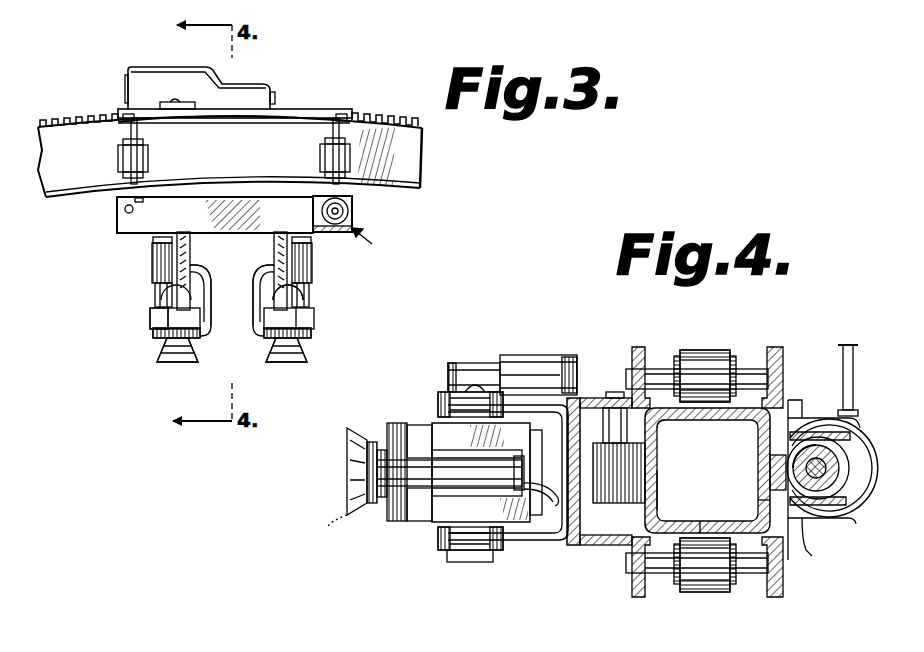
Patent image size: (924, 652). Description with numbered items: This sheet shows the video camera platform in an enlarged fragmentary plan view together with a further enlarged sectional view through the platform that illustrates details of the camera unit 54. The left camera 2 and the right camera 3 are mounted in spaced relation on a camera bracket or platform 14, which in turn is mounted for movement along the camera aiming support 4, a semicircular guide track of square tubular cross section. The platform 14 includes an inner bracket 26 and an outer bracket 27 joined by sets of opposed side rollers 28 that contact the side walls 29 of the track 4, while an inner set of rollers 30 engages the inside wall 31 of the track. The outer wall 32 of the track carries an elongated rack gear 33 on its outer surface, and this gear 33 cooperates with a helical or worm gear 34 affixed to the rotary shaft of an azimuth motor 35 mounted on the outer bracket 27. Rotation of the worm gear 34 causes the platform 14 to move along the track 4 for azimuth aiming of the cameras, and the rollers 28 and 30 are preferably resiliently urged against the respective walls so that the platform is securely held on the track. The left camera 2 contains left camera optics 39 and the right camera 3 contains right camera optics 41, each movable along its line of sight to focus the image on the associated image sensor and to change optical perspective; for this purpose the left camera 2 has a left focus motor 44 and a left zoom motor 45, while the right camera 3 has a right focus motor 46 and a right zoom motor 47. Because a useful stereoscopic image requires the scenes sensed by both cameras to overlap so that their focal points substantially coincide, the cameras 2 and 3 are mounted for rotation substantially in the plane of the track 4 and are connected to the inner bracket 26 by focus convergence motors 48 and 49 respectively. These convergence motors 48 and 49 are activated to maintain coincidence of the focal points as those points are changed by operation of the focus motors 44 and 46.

In FIG. 3, the left video camera 2 is at (300, 326).
In FIG. 3, the right video camera 3 is at (168, 320).
In FIG. 4, the right video camera 3 is at (438, 512).
In FIG. 3, the camera aiming support 4 is at (412, 172).
In FIG. 4, the camera aiming support 4 is at (676, 506).
In FIG. 3, the camera bracket or platform 14 is at (377, 242).
In FIG. 4, the camera bracket or platform 14 is at (562, 545).
In FIG. 3, the inner bracket 26 is at (117, 229).
In FIG. 4, the inner bracket 26 is at (590, 396).
In FIG. 3, the outer bracket 27 is at (300, 109).
In FIG. 4, the outer bracket 27 is at (812, 556).
In FIG. 3, the side rollers 28 is at (117, 156).
In FIG. 4, the side rollers 28 is at (708, 350).
In FIG. 4, the side walls 29 is at (680, 417).
In FIG. 3, the inner set of rollers 30 is at (352, 214).
In FIG. 4, the inner set of rollers 30 is at (636, 470).
In FIG. 4, the inside wall 31 is at (652, 494).
In FIG. 4, the outer wall 32 is at (757, 460).
In FIG. 3, the rack gear 33 is at (392, 122).
In FIG. 4, the rack gear 33 is at (770, 502).
In FIG. 4, the helical or worm gear 34 is at (815, 450).
In FIG. 3, the azimuth motor 35 is at (160, 66).
In FIG. 4, the azimuth motor 35 is at (850, 516).
In FIG. 3, the left camera optics 39 is at (300, 362).
In FIG. 3, the right camera optics 41 is at (162, 365).
In FIG. 4, the right camera optics 41 is at (346, 502).
In FIG. 3, the left focus motor 44 is at (312, 316).
In FIG. 3, the left zoom motor 45 is at (255, 299).
In FIG. 3, the right focus motor 46 is at (155, 326).
In FIG. 3, the right zoom motor 47 is at (207, 330).
In FIG. 4, the right zoom motor 47 is at (418, 465).
In FIG. 3, the focus convergence motor 48 is at (312, 270).
In FIG. 3, the focus convergence motor 49 is at (152, 268).
In FIG. 4, the focus convergence motor 49 is at (523, 355).
In FIG. 3, the camera unit 54 is at (232, 190).